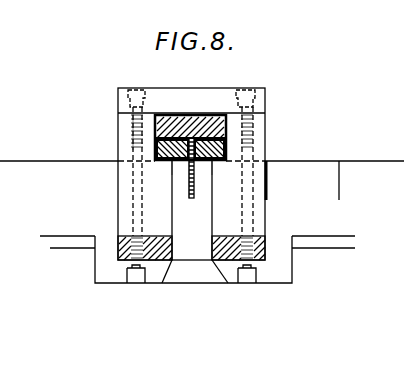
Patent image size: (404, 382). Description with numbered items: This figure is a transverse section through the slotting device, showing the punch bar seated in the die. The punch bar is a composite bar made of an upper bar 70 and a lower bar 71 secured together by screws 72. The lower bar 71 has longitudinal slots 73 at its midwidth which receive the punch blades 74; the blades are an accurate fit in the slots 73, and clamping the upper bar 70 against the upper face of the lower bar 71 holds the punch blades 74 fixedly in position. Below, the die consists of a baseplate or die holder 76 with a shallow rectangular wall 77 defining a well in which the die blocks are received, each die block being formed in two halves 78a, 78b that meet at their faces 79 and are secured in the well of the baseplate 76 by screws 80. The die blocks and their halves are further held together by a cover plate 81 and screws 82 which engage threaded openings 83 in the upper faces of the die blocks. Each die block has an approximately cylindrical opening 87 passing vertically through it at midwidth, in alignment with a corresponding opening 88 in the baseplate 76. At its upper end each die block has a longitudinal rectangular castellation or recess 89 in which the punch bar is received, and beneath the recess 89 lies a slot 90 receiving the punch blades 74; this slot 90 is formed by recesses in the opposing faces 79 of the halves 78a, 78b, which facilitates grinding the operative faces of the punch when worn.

The upper bar 70 is at (224, 139).
The lower bar 71 is at (222, 152).
The screws 72 is at (169, 162).
The longitudinal slots 73 is at (212, 141).
The punch blades 74 is at (189, 192).
The baseplate or die holder 76 is at (108, 271).
The shallow rectangular wall 77 is at (107, 243).
The die block half 78a is at (130, 195).
The die block half 78b is at (260, 216).
The faces 79 is at (188, 224).
The screws 80 is at (127, 274).
The cover plate 81 is at (170, 100).
The screws 82 is at (138, 93).
The threaded openings 83 is at (133, 133).
The cylindrical opening 87 is at (181, 218).
The opening 88 is at (270, 268).
The longitudinal rectangular castellation or recess 89 is at (155, 152).
The slot 90 is at (195, 192).